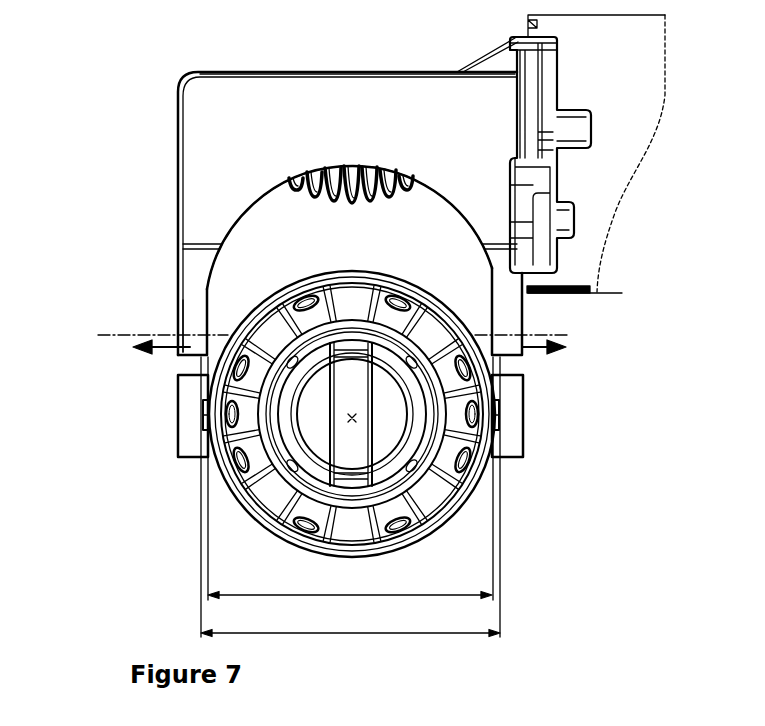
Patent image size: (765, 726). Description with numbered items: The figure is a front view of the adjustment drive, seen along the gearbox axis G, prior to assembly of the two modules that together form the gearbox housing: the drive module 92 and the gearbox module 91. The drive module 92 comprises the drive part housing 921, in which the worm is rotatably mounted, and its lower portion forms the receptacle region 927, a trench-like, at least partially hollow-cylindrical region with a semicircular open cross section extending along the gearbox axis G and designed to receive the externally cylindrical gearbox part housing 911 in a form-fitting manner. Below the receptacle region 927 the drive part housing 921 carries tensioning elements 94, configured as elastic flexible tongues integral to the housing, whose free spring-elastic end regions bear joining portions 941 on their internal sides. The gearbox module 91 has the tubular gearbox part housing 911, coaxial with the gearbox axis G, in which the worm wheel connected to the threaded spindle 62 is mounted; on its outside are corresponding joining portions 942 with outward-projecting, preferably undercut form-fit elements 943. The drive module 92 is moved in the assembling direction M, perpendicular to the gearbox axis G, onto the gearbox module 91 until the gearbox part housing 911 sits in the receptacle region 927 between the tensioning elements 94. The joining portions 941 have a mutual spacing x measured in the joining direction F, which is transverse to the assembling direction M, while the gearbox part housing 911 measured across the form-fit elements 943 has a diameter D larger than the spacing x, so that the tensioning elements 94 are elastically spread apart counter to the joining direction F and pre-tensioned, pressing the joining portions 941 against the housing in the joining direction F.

The drive module 92 is at (117, 86).
The drive part housing 921 is at (363, 98).
The receptacle region 927 is at (297, 243).
The assembling direction M is at (349, 234).
The tensioning elements 94 is at (200, 322).
The joining portions 941 is at (214, 357).
The joining portions 942 is at (208, 445).
The form-fit elements 943 is at (202, 405).
The gearbox module 91 is at (330, 414).
The gearbox part housing 911 is at (237, 492).
The threaded spindle 62 is at (373, 440).
The gearbox axis G is at (365, 423).
The joining direction F is at (334, 352).
The mutual spacing x is at (350, 588).
The diameter D is at (350, 626).